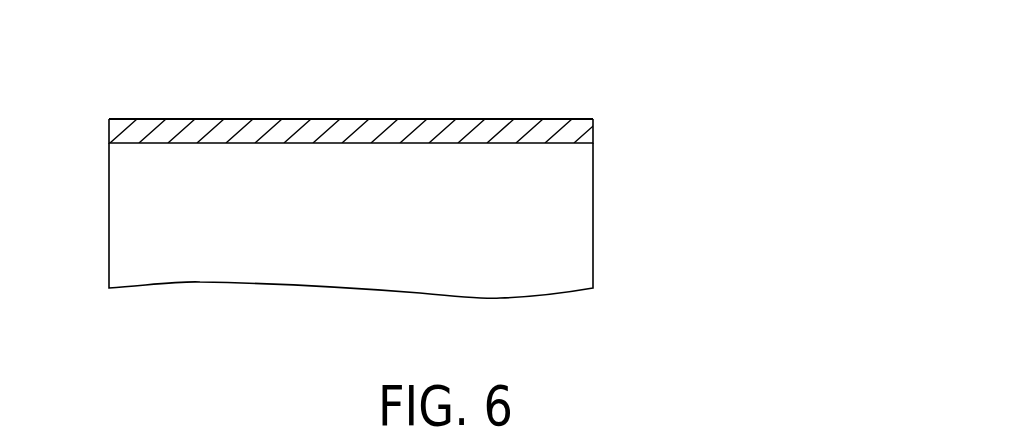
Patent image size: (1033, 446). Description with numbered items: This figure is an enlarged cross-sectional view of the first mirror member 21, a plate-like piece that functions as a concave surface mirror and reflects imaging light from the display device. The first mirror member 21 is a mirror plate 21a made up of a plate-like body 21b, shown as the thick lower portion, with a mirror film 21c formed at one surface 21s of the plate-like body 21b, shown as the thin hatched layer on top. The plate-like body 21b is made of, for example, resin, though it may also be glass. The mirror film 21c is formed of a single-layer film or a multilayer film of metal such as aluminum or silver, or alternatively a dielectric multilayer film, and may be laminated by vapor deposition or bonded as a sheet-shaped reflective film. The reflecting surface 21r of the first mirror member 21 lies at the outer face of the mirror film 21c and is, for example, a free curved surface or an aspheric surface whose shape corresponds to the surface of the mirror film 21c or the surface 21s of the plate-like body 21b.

The first mirror member 21 is at (97, 118).
The mirror plate 21a is at (351, 209).
The reflecting surface 21r is at (348, 118).
The surface 21s is at (475, 130).
The mirror film 21c is at (582, 135).
The plate-like body 21b is at (576, 228).